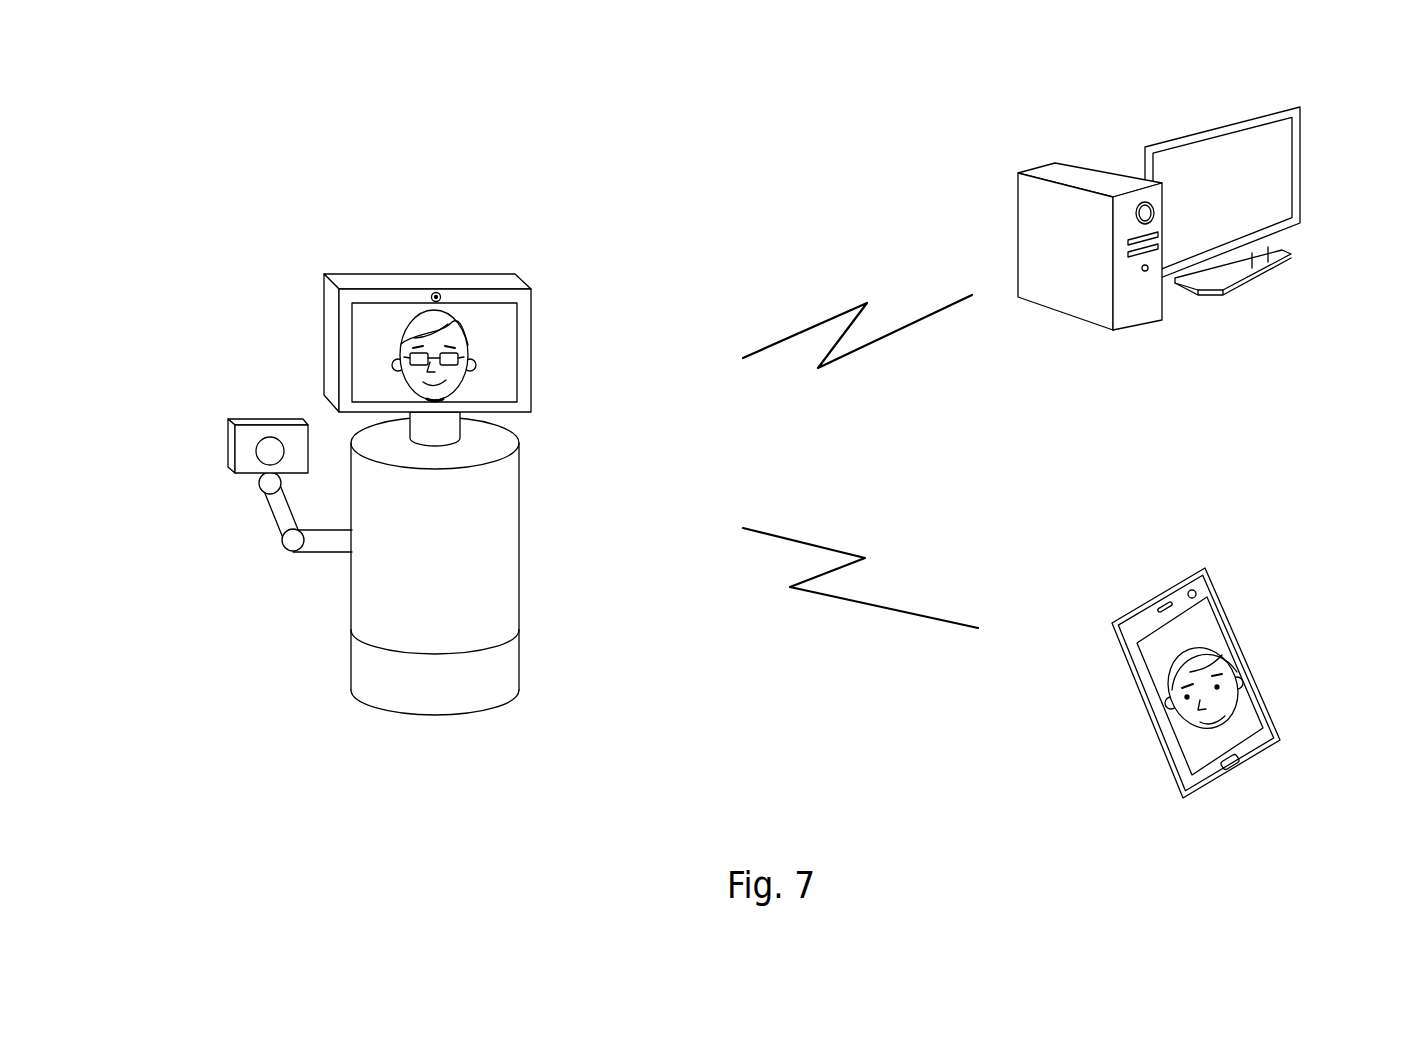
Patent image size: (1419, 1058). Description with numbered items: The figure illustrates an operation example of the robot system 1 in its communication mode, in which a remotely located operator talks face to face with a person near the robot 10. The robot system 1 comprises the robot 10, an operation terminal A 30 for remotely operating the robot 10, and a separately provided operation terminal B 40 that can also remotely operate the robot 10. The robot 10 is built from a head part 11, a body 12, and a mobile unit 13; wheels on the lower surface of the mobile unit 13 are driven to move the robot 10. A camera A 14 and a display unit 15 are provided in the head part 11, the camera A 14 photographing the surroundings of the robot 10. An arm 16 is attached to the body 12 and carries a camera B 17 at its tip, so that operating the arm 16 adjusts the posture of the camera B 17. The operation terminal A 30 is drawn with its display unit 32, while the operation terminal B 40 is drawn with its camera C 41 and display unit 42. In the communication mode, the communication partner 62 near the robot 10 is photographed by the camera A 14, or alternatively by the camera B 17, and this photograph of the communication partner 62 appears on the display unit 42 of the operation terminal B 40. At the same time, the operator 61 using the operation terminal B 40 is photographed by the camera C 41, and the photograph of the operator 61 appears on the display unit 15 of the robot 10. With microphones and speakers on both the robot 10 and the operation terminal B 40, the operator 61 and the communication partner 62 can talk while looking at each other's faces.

The robot system 1 is at (247, 168).
The robot 10 is at (567, 243).
The head part 11 is at (532, 353).
The body 12 is at (520, 532).
The mobile unit 13 is at (520, 665).
The camera A 14 is at (437, 292).
The display unit 15 is at (503, 323).
The arm 16 is at (280, 517).
The camera B 17 is at (243, 433).
The operator 61 is at (390, 337).
The operation terminal A 30 is at (1210, 255).
The display unit 32 is at (1283, 183).
The operation terminal B 40 is at (1300, 562).
The camera C 41 is at (1212, 577).
The display unit 42 is at (1243, 720).
The communication partner 62 is at (1195, 632).